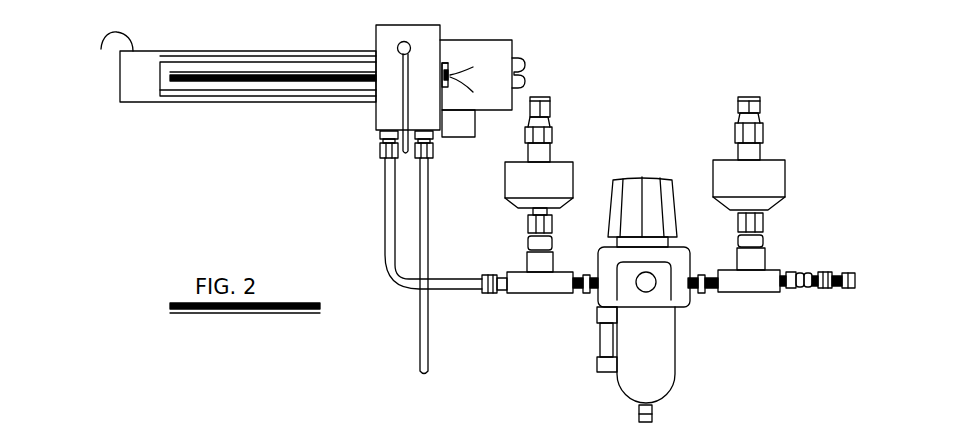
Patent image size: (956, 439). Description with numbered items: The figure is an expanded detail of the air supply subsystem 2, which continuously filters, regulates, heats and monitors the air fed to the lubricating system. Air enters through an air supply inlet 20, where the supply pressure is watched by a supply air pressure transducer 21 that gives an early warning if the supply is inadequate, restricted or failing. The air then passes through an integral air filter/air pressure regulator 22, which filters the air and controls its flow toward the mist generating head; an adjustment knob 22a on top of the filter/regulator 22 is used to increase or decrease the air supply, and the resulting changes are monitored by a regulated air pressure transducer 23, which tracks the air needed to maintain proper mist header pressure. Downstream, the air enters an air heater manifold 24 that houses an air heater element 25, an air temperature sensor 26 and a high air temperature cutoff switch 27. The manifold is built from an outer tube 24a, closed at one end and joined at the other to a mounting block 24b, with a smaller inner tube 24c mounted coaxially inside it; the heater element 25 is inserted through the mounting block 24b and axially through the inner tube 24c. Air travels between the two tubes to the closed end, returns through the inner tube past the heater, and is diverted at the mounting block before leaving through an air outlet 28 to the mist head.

The air supply subsystem 2 is at (740, 66).
The air supply inlet 20 is at (845, 288).
The supply air pressure transducer 21 is at (752, 180).
The air filter/air pressure regulator 22 is at (638, 368).
The adjustment knob 22a is at (643, 200).
The regulated air pressure transducer 23 is at (555, 187).
The air heater manifold 24 is at (172, 106).
The outer tube 24a is at (101, 49).
The mounting block 24b is at (410, 25).
The inner tube 24c is at (217, 95).
The air heater element 25 is at (267, 83).
The air temperature sensor 26 is at (410, 47).
The high air temperature cutoff switch 27 is at (403, 103).
The air outlet 28 is at (433, 155).